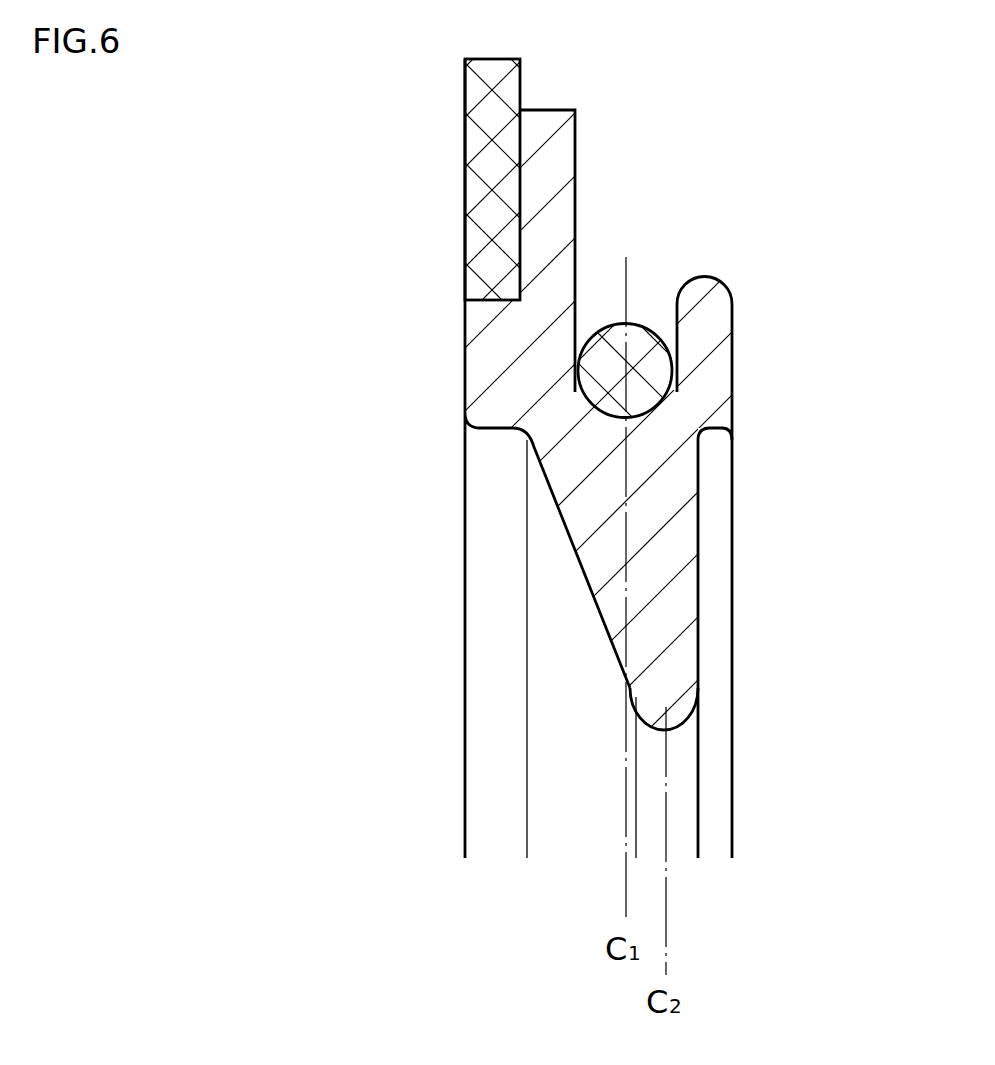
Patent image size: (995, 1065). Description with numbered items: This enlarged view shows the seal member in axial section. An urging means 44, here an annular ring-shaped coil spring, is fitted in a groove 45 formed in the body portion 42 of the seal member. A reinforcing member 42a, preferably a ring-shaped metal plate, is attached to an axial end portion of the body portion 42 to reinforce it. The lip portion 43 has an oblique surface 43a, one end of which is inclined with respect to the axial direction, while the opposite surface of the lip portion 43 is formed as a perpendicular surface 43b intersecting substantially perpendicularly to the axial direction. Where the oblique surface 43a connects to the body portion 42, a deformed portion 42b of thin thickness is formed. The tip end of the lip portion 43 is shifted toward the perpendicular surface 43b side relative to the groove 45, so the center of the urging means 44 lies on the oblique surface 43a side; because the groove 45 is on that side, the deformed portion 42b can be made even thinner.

The body portion 42 is at (487, 347).
The reinforcing member 42a is at (483, 186).
The deformed portion 42b is at (550, 442).
The lip portion 43 is at (653, 578).
The oblique surface 43a is at (598, 613).
The perpendicular surface 43b is at (700, 512).
The urging means 44 is at (628, 370).
The groove 45 is at (677, 303).